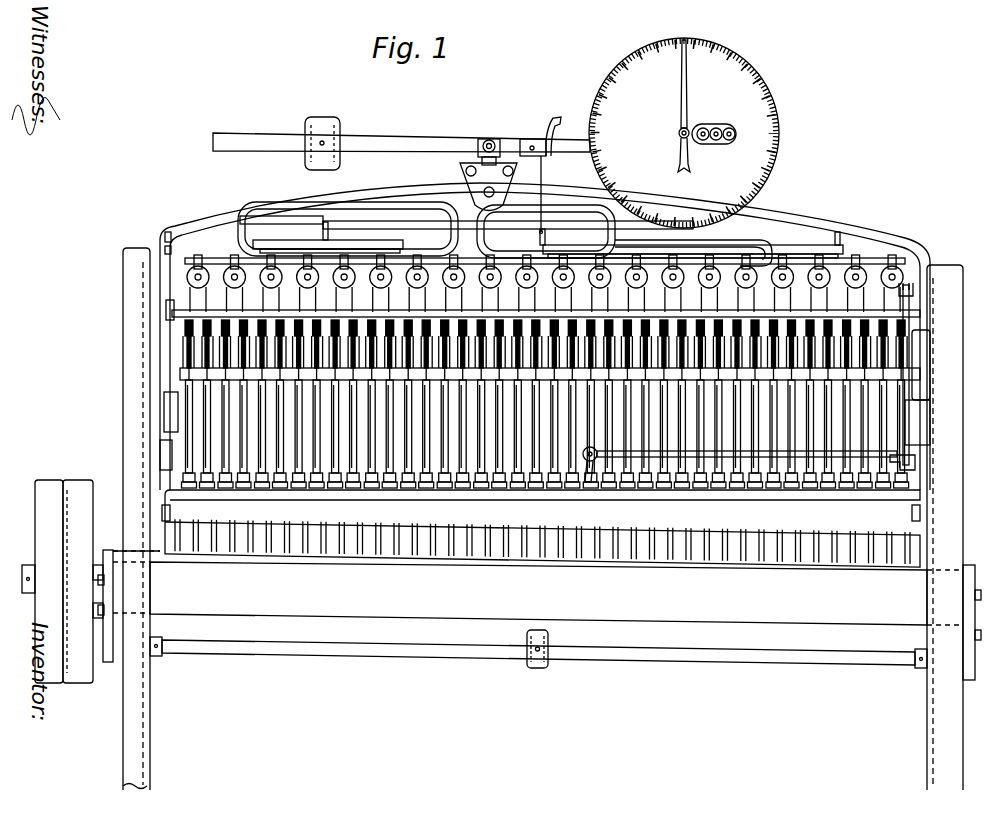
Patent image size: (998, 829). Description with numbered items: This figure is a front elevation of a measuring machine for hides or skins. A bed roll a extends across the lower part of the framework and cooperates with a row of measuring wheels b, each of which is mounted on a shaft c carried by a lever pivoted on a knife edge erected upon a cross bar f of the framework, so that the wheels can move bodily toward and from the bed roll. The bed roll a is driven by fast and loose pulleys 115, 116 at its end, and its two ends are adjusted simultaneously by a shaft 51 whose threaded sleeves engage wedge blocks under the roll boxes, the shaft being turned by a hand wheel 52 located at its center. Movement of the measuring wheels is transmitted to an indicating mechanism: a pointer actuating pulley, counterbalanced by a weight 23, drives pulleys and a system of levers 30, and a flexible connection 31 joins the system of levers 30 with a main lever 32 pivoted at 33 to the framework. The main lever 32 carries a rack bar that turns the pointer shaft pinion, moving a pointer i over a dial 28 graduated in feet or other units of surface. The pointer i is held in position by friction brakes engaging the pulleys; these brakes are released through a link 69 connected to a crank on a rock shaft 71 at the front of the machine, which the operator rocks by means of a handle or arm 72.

The main lever 32 is at (432, 140).
The pivot 33 is at (490, 140).
The flexible connection 31 is at (541, 196).
The system of levers 30 is at (403, 245).
The dial 28 is at (777, 146).
The pointer i is at (682, 97).
The weight 23 is at (858, 289).
The link 69 is at (907, 368).
The rock shaft 71 is at (738, 500).
The handle or arm 72 is at (592, 498).
The shaft c is at (854, 498).
The cross bar f is at (672, 500).
The measuring wheels b is at (455, 496).
The bed roll a is at (538, 588).
The shaft 51 is at (640, 662).
The hand wheel 52 is at (536, 669).
The fast pulley 115 is at (84, 474).
The loose pulley 116 is at (45, 474).